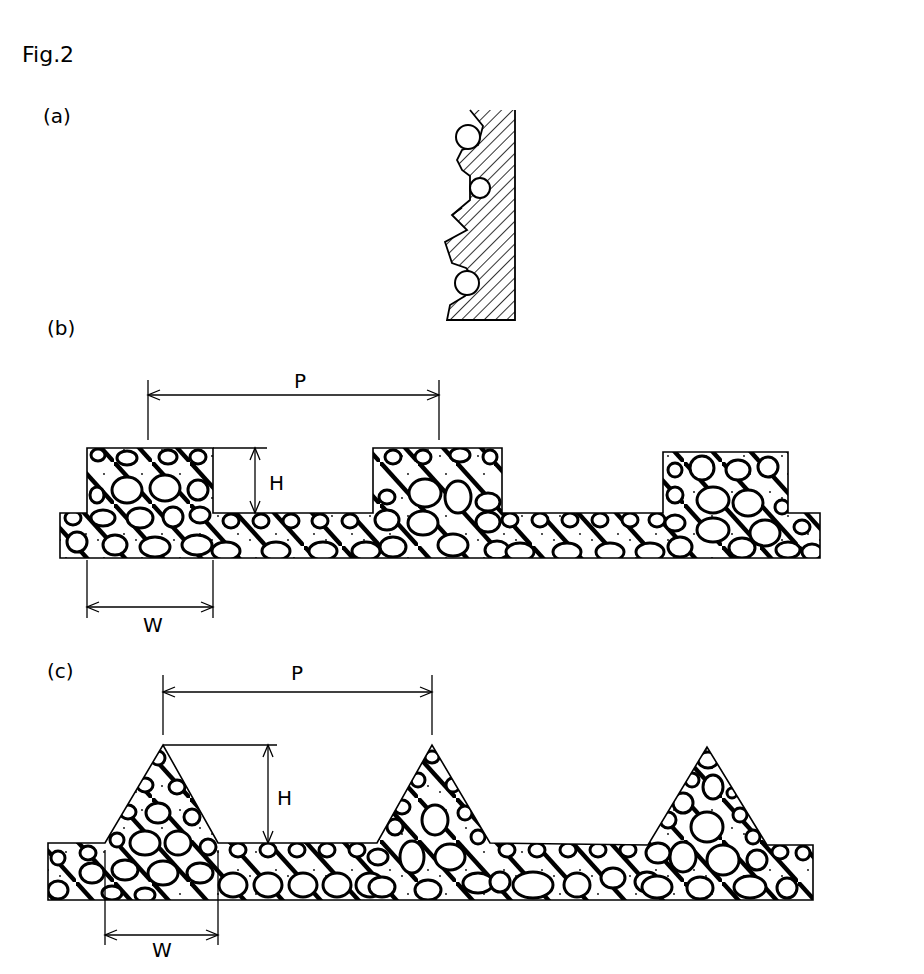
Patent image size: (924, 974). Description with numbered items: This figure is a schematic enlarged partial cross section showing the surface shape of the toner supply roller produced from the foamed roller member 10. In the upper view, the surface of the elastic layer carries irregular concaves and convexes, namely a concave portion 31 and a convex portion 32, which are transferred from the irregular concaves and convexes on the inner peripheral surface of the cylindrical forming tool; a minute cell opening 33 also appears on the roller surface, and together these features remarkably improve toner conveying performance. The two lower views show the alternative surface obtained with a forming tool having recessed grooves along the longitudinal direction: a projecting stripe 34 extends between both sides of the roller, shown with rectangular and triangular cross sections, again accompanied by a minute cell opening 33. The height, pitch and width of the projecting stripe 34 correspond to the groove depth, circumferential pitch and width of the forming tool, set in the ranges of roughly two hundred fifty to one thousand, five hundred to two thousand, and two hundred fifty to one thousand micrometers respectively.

The roller member 10 is at (513, 162).
The concave portion 31 is at (466, 188).
The convex portion 32 is at (442, 215).
The cell opening 33 is at (477, 132).
The projecting stripe 34 is at (125, 452).